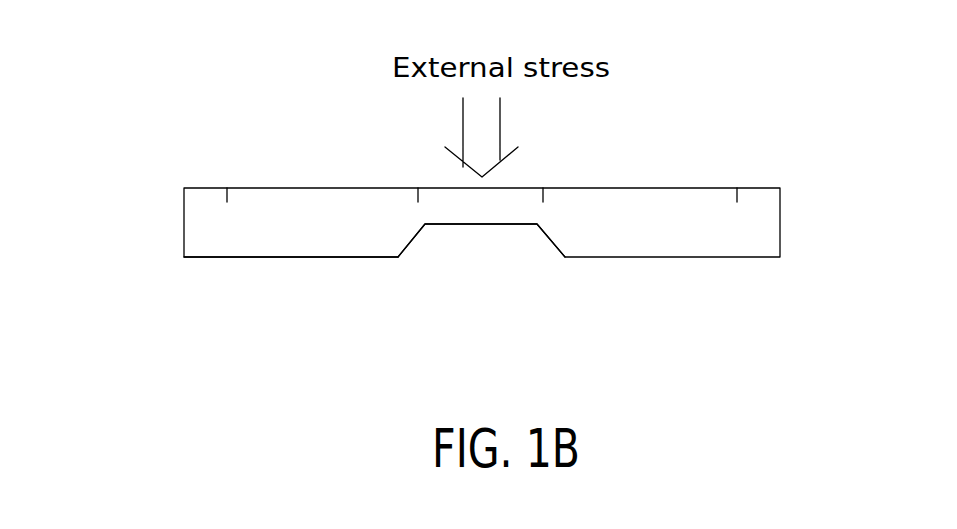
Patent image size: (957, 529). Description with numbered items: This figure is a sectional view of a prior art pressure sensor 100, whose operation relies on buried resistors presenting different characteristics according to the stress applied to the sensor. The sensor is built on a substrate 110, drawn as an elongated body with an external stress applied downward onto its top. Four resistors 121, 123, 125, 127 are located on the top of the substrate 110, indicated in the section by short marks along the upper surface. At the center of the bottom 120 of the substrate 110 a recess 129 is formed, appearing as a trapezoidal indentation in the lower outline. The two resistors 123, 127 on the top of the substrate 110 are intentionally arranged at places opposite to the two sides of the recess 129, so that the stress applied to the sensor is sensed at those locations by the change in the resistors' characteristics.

The pressure sensor 100 is at (455, 214).
The substrate 110 is at (762, 228).
The bottom of the substrate 120 is at (260, 258).
The resistor 121 is at (227, 193).
The resistor 123 is at (418, 193).
The resistor 125 is at (543, 193).
The resistor 127 is at (737, 196).
The recess 129 is at (485, 240).